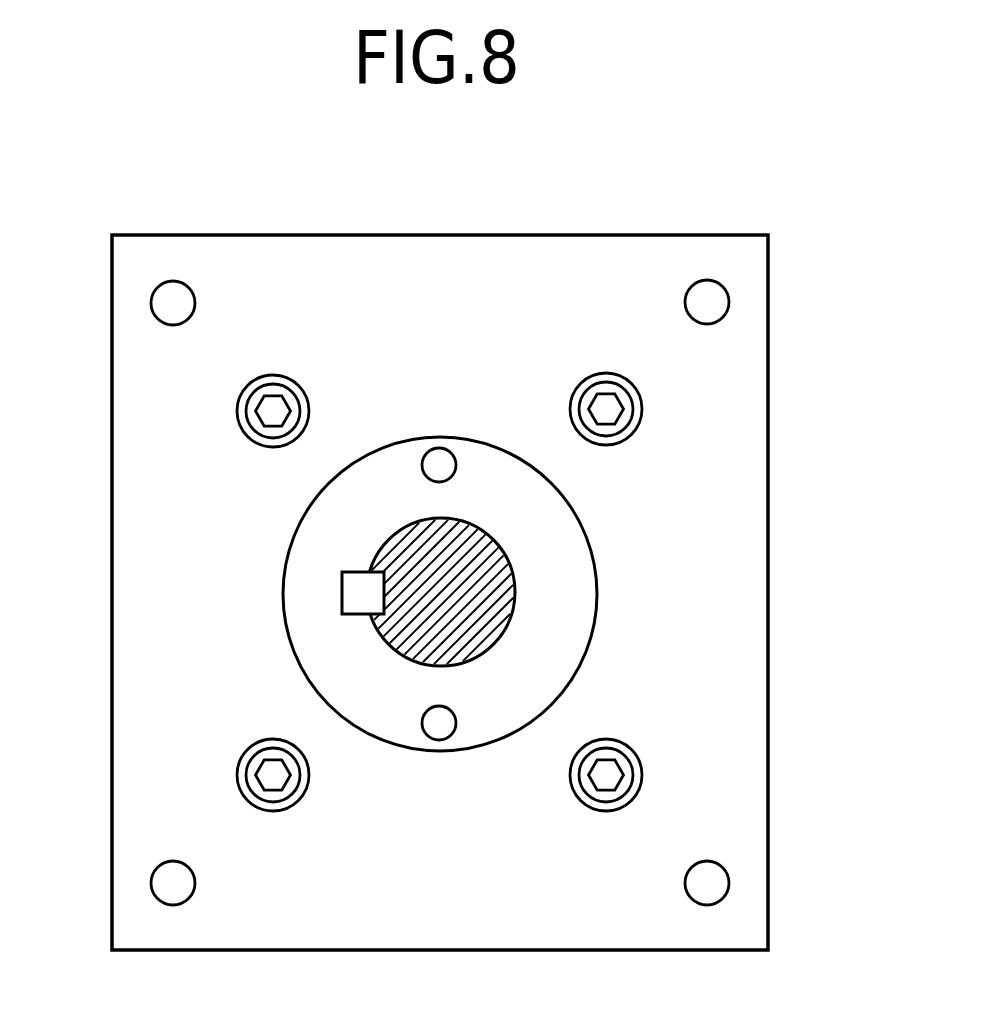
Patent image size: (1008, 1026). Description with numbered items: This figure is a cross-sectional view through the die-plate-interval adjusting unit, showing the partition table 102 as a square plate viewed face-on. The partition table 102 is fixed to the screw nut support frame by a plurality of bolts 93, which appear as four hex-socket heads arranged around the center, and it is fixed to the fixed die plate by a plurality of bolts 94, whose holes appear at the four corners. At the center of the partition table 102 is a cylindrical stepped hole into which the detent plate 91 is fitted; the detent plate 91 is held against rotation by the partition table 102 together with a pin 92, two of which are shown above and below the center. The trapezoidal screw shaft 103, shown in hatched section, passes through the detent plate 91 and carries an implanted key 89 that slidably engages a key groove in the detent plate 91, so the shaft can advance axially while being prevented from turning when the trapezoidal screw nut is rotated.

The key 89 is at (342, 593).
The detent plate 91 is at (598, 593).
The pin 92 is at (437, 448).
The bolts 93 is at (612, 432).
The bolts 94 is at (706, 280).
The partition table 102 is at (768, 403).
The trapezoidal screw shaft 103 is at (487, 648).